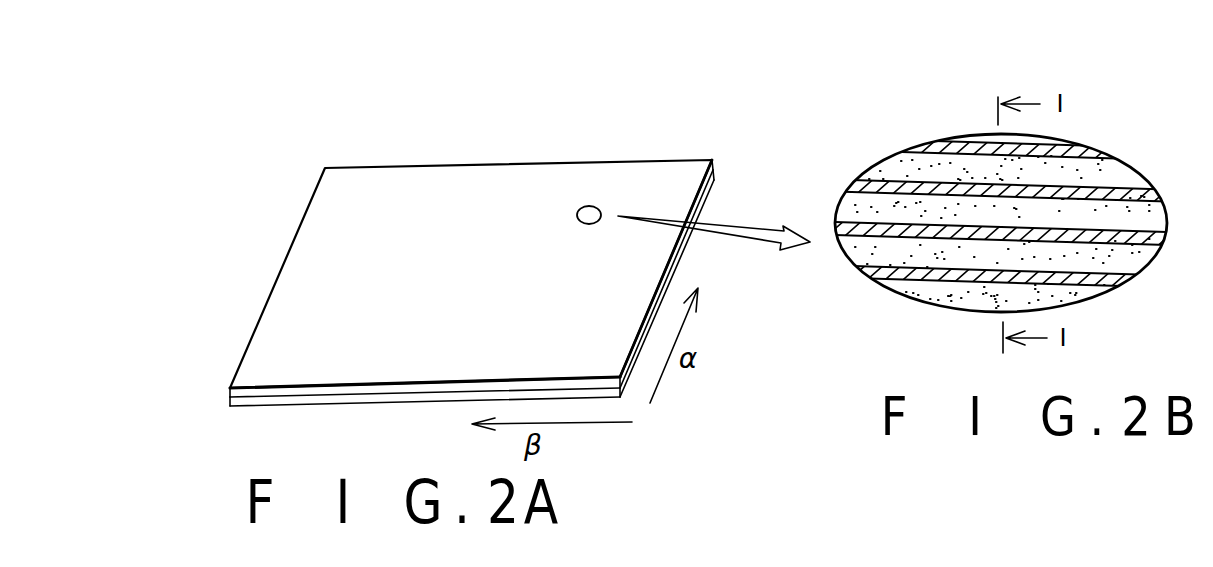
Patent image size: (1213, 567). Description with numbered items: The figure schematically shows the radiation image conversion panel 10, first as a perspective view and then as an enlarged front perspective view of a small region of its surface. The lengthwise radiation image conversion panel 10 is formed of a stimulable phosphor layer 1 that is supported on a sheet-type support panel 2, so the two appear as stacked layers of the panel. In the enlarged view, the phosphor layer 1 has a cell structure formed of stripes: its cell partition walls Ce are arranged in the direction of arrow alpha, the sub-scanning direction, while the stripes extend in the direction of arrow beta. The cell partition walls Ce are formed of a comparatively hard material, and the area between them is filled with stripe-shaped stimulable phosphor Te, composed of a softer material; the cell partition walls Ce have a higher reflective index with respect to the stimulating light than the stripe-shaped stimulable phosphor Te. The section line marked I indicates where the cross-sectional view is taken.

In FIG. 2A, the radiation image conversion panel 10 is at (439, 221).
In FIG. 2A, the phosphor layer 1 is at (230, 393).
In FIG. 2A, the support panel 2 is at (230, 403).
In FIG. 2B, the cell partition wall Ce is at (1107, 187).
In FIG. 2B, the tellurium phase (stippled regions) Te is at (1148, 210).